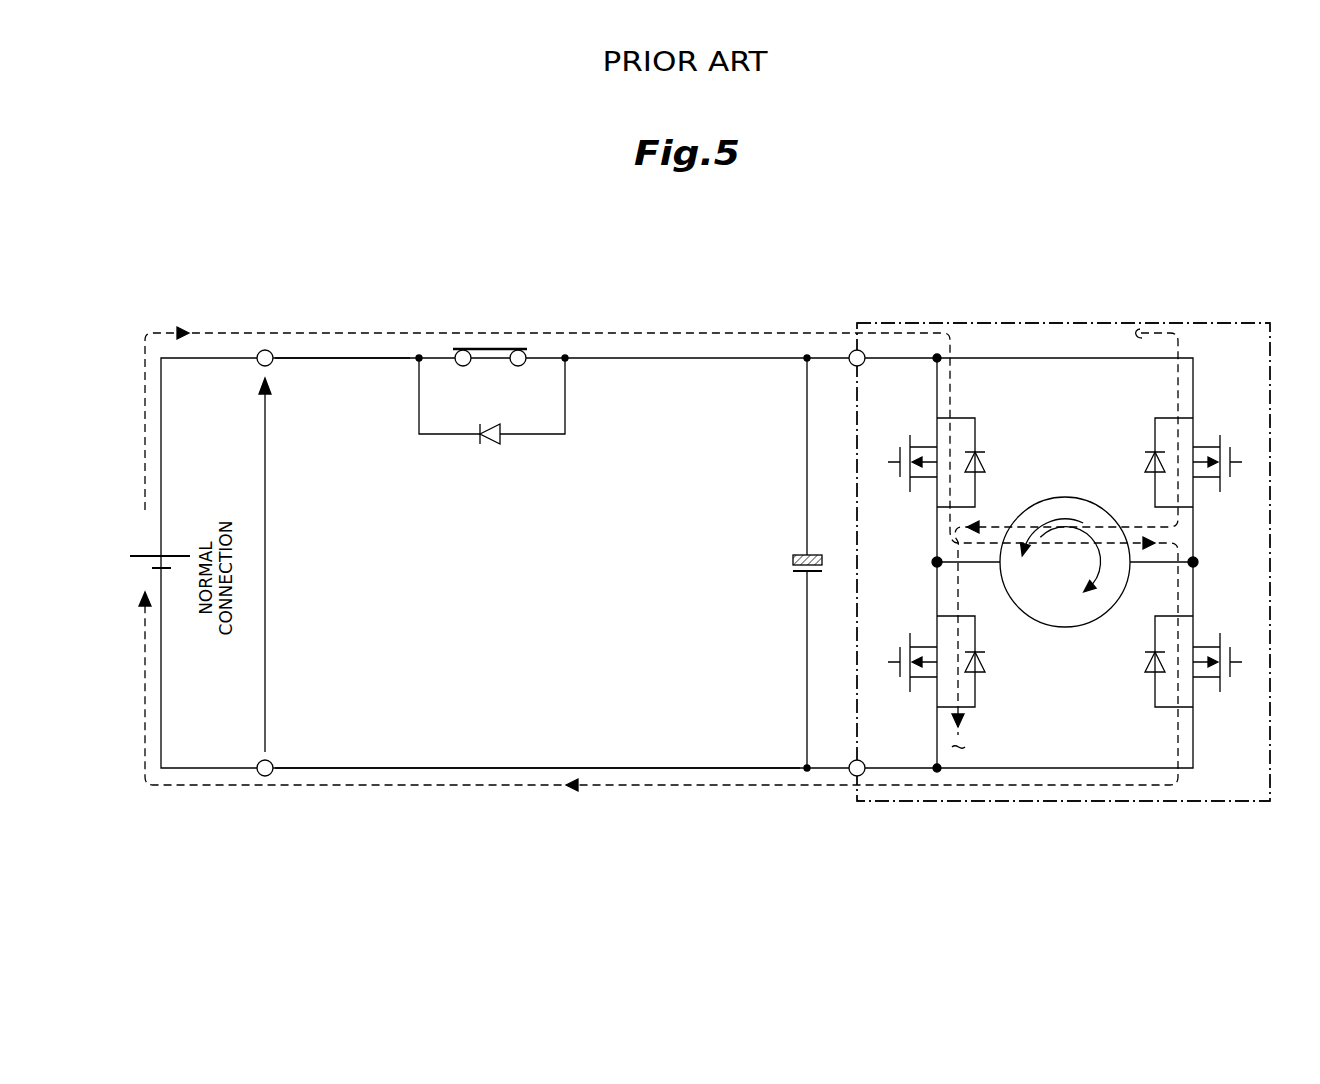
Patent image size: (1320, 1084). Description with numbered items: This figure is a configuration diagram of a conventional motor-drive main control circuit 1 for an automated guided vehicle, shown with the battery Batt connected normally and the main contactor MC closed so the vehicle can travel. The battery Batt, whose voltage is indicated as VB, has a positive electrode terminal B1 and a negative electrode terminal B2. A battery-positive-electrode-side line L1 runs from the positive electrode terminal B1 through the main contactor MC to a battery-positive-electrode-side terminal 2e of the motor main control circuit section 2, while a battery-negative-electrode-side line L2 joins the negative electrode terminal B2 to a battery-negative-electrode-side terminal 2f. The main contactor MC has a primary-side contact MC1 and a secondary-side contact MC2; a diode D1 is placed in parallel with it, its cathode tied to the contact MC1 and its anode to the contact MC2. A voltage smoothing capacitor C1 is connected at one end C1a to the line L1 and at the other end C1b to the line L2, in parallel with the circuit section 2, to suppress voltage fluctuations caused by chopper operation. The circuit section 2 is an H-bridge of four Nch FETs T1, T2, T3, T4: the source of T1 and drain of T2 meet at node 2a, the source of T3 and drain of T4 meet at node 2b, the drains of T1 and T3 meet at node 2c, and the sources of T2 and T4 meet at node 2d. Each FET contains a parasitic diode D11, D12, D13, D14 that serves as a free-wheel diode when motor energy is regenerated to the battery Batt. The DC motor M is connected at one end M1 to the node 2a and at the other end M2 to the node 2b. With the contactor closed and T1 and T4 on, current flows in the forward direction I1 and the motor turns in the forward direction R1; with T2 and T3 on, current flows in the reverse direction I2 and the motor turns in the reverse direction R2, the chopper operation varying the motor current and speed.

The motor-drive main control circuit 1 is at (1142, 252).
The motor main control circuit section 2 is at (1070, 323).
The forward-direction current I1 is at (902, 323).
The reverse-direction current I2 is at (1167, 322).
The battery Batt is at (139, 556).
The battery voltage VB is at (279, 565).
The positive electrode terminal B1 is at (268, 349).
The negative electrode terminal B2 is at (265, 778).
The battery-positive-electrode-side line L1 is at (318, 350).
The battery-negative-electrode-side line L2 is at (338, 770).
The main contactor MC is at (487, 346).
The primary-side contact MC1 is at (450, 350).
The secondary-side contact MC2 is at (528, 350).
The diode D1 is at (488, 446).
The voltage smoothing capacitor C1 is at (800, 553).
The one end of voltage smoothing capacitor C1a is at (806, 352).
The other end of voltage smoothing capacitor C1b is at (806, 755).
The node 2a is at (934, 560).
The node 2b is at (1196, 557).
The node 2c is at (941, 355).
The node 2d is at (938, 778).
The battery-positive-electrode-side terminal 2e is at (853, 350).
The battery-negative-electrode-side terminal 2f is at (853, 778).
The DC motor M is at (1044, 501).
The one end of DC motor M1 is at (936, 558).
The other end of DC motor M2 is at (1196, 560).
The forward rotation direction R1 is at (1068, 520).
The reverse rotation direction R2 is at (1080, 600).
The Nch FET T1 is at (906, 441).
The Nch FET T2 is at (906, 641).
The Nch FET T3 is at (1223, 440).
The Nch FET T4 is at (1223, 640).
The parasitic diode D11 is at (985, 465).
The parasitic diode D12 is at (990, 660).
The parasitic diode D13 is at (1146, 463).
The parasitic diode D14 is at (1141, 672).